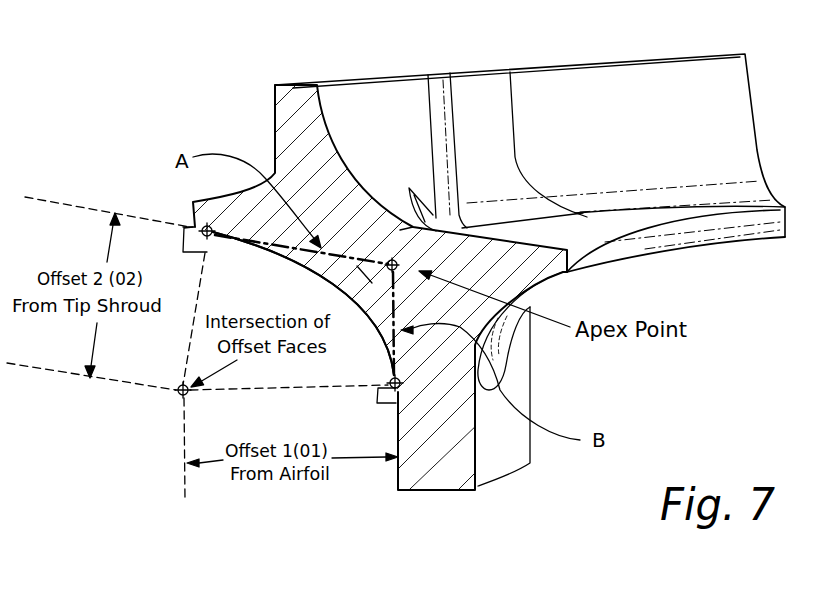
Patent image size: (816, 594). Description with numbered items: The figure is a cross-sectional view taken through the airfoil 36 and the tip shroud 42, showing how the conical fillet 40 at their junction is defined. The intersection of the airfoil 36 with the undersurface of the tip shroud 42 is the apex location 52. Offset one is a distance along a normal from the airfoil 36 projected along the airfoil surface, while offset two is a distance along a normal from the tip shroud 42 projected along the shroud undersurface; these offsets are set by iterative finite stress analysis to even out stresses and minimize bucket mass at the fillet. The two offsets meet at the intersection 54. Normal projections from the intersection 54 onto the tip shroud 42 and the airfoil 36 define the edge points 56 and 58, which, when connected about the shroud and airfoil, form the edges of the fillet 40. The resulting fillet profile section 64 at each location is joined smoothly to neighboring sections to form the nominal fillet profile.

The airfoil 36 is at (503, 455).
The conical fillet 40 is at (360, 270).
The tip shroud 42 is at (575, 213).
The apex location 52 is at (398, 235).
The intersection of offsets 54 is at (177, 395).
The edge point on tip shroud 56 is at (211, 236).
The edge point on airfoil 58 is at (400, 388).
The fillet profile section 64 is at (360, 300).